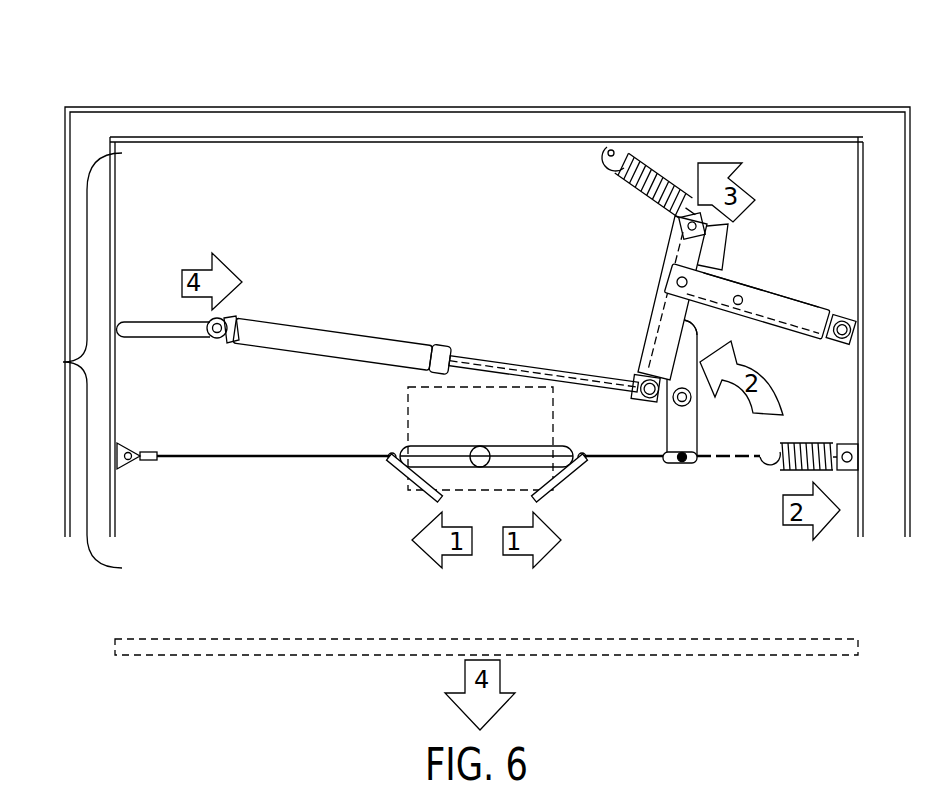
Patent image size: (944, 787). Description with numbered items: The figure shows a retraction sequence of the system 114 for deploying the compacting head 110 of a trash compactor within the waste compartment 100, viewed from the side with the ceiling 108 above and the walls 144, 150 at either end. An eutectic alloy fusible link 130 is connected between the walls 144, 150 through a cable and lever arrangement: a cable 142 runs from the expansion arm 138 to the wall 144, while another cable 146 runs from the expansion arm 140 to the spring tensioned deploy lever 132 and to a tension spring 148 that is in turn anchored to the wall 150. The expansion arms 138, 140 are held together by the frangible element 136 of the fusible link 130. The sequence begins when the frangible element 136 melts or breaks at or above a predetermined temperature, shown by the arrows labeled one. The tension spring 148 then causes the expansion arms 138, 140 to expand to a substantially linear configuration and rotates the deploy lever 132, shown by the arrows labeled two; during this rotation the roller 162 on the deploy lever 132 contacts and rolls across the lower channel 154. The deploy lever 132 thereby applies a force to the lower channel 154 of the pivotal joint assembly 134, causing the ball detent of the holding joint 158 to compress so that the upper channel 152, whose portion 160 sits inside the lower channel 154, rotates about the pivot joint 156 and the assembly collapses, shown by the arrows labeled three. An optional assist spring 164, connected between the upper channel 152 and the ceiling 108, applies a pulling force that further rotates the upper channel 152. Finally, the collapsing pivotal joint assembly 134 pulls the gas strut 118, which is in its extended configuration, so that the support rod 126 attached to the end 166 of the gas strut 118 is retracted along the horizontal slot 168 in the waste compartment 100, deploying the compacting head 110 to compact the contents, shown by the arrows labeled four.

The waste compartment 100 is at (290, 97).
The ceiling 108 is at (568, 152).
The compacting head 110 is at (276, 657).
The system 114 is at (70, 360).
The gas strut 118 is at (330, 368).
The support rod 126 is at (228, 316).
The eutectic alloy fusible link 130 is at (458, 494).
The deploy lever 132 is at (703, 413).
The pivotal joint assembly 134 is at (783, 262).
The frangible element 136 is at (394, 476).
The expansion arm 138 is at (440, 443).
The expansion arm 140 is at (530, 443).
The cable 142 is at (272, 463).
The wall 144 is at (122, 224).
The cable 146 is at (594, 466).
The tension spring 148 is at (776, 474).
The wall 150 is at (852, 153).
The upper channel 152 is at (636, 345).
The lower channel 154 is at (800, 294).
The pivot joint 156 is at (672, 278).
The holding joint 158 is at (748, 308).
The portion of the upper channel 160 is at (724, 260).
The roller 162 is at (710, 330).
The assist spring 164 is at (603, 197).
The end of the gas strut 166 is at (217, 349).
The horizontal slot 168 is at (152, 348).